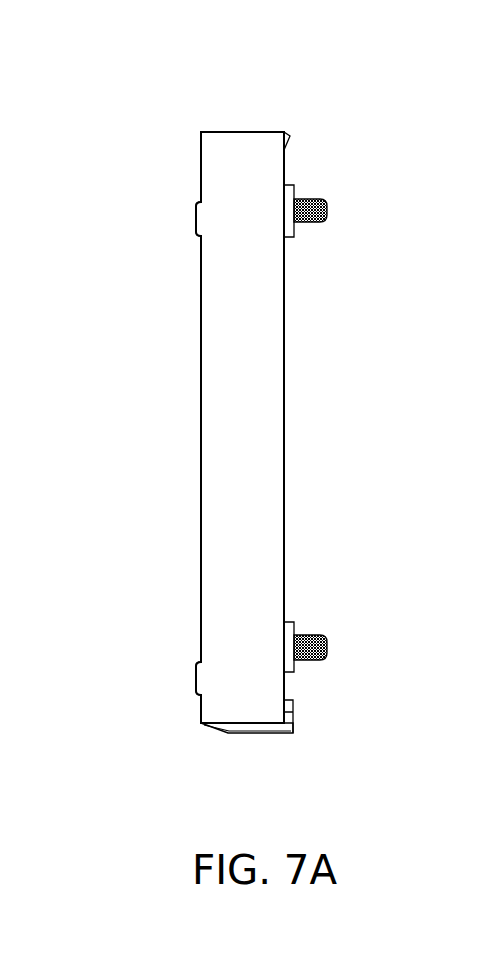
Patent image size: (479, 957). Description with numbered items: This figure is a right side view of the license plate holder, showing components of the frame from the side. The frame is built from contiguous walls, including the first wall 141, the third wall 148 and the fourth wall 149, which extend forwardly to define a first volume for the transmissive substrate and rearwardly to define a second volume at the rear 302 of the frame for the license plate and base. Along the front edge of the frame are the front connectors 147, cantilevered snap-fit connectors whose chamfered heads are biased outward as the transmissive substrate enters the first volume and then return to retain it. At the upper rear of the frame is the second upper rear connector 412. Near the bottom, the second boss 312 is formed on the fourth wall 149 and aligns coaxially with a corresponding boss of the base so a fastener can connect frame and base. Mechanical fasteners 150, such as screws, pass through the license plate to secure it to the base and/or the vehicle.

The first wall 141 is at (203, 300).
The front connector 147 is at (196, 216).
The third wall 148 is at (246, 132).
The fourth wall 149 is at (258, 735).
The mechanical fastener 150 is at (312, 198).
The rear 302 is at (285, 385).
The second boss 312 is at (282, 735).
The second upper rear connector 412 is at (289, 135).